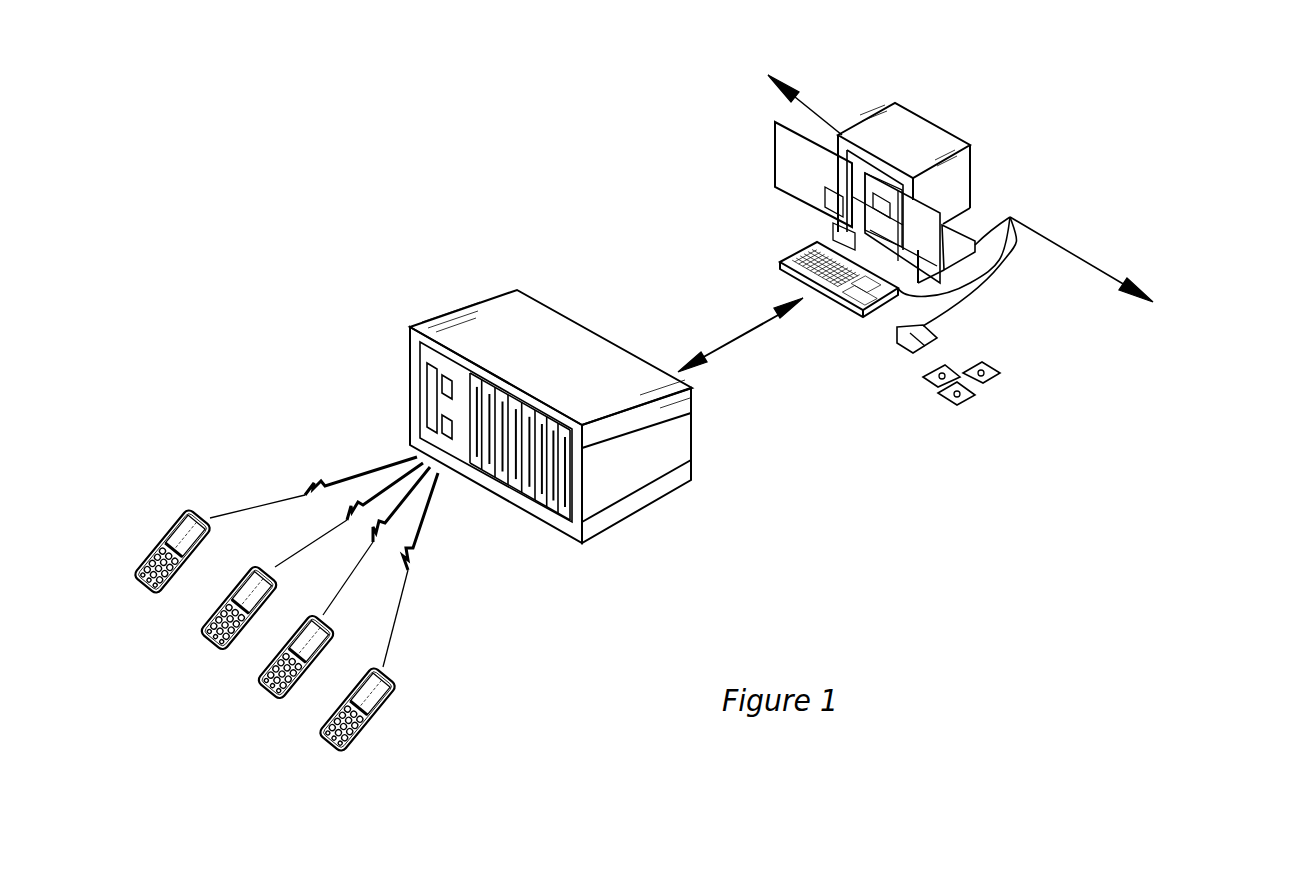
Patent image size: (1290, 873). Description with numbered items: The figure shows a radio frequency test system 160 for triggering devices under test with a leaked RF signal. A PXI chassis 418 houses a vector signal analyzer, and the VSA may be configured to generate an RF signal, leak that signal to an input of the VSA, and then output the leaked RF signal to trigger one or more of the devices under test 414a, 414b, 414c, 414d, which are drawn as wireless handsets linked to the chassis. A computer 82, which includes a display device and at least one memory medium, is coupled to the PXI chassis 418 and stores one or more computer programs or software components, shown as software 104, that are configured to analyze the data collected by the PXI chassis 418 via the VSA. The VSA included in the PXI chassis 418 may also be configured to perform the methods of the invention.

The radio frequency (RF) test system 160 is at (1200, 141).
The PXI chassis 418 is at (583, 333).
The computer 82 is at (927, 128).
The software 104 is at (965, 398).
The device under test (DUT) 414a is at (145, 587).
The device under test (DUT) 414b is at (212, 642).
The device under test (DUT) 414c is at (268, 693).
The device under test (DUT) 414d is at (328, 747).